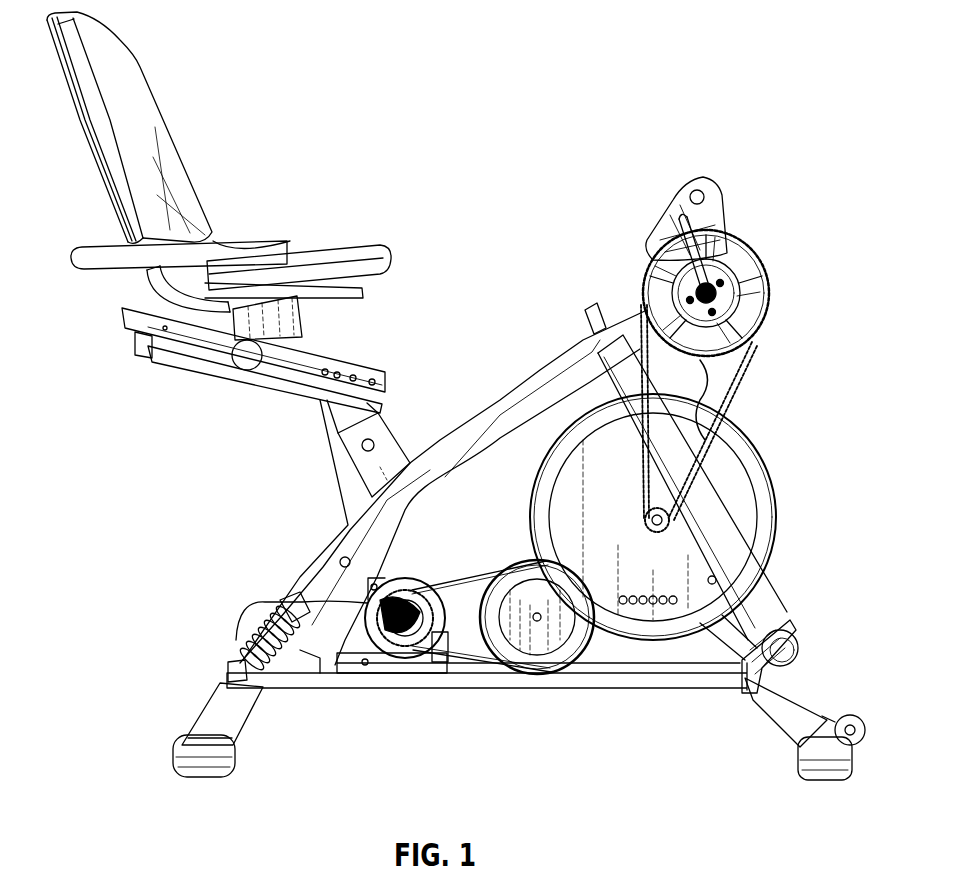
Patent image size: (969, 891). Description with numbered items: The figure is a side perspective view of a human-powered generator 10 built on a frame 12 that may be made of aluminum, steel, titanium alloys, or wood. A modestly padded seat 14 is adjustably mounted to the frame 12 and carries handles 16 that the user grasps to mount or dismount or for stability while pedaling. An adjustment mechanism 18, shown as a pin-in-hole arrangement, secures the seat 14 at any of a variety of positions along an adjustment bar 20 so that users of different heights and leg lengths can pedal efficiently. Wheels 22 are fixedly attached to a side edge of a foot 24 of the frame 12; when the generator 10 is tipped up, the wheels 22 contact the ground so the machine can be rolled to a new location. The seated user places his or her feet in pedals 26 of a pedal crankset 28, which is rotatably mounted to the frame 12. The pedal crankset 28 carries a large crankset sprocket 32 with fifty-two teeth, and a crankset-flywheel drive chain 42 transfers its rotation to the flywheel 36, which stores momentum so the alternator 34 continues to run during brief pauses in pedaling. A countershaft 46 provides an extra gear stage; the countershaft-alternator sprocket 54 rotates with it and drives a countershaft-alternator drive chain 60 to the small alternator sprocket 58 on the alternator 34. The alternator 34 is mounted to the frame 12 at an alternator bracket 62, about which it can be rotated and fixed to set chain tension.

The generator 10 is at (512, 233).
The frame 12 is at (512, 415).
The seat 14 is at (130, 68).
The handles 16 is at (130, 270).
The adjustment mechanism 18 is at (243, 371).
The adjustment bar 20 is at (358, 360).
The wheels 22 is at (847, 717).
The foot 24 is at (197, 727).
The pedals 26 is at (703, 182).
The pedal crankset 28 is at (713, 267).
The crankset sprocket 32 is at (745, 287).
The alternator 34 is at (413, 580).
The flywheel 36 is at (760, 497).
The crankset-flywheel drive chain 42 is at (750, 357).
The countershaft 46 is at (537, 615).
The countershaft-alternator sprocket 54 is at (540, 640).
The alternator sprocket 58 is at (417, 627).
The countershaft-alternator drive chain 60 is at (490, 670).
The alternator bracket 62 is at (423, 677).